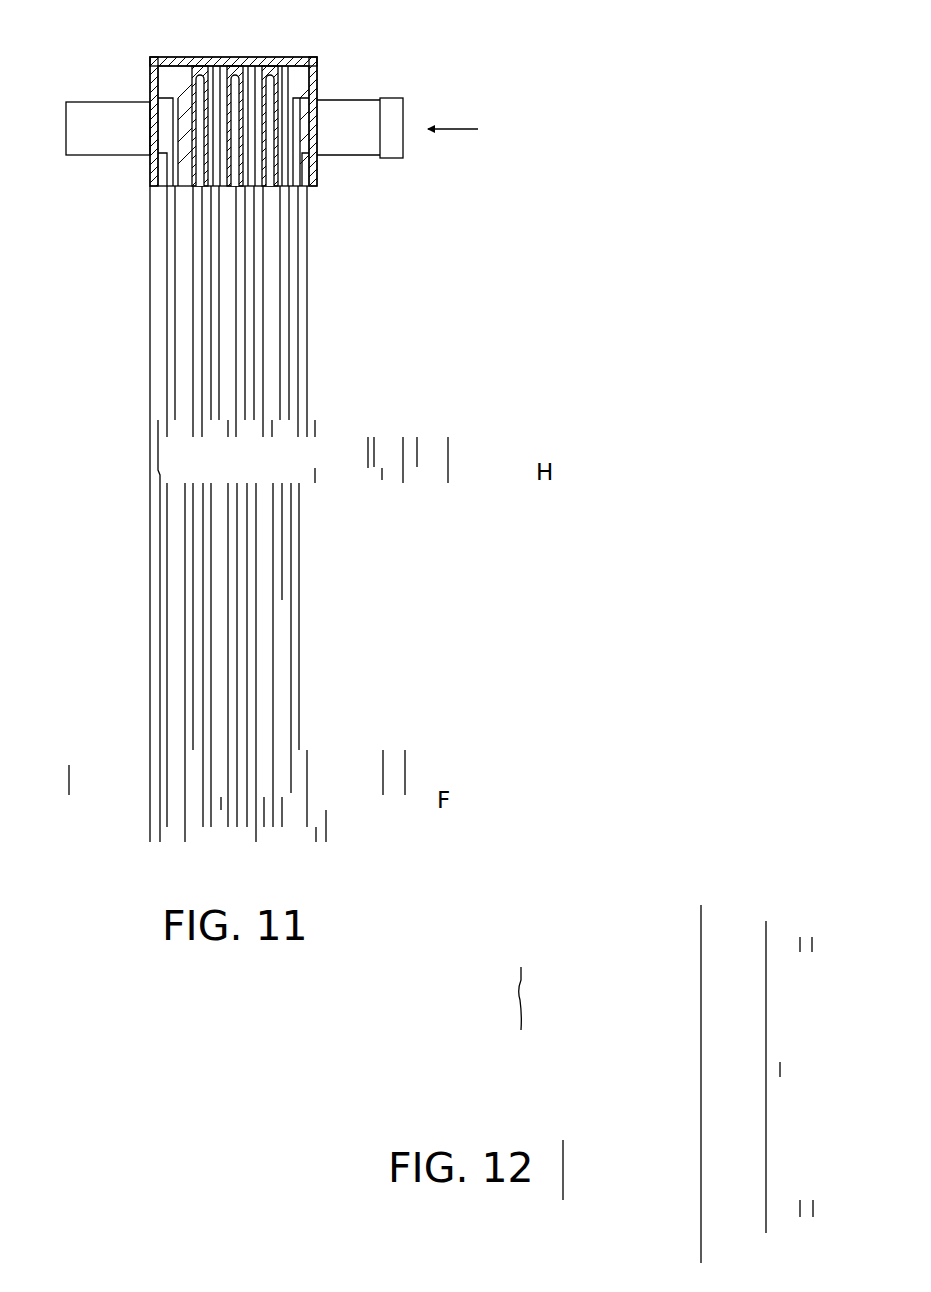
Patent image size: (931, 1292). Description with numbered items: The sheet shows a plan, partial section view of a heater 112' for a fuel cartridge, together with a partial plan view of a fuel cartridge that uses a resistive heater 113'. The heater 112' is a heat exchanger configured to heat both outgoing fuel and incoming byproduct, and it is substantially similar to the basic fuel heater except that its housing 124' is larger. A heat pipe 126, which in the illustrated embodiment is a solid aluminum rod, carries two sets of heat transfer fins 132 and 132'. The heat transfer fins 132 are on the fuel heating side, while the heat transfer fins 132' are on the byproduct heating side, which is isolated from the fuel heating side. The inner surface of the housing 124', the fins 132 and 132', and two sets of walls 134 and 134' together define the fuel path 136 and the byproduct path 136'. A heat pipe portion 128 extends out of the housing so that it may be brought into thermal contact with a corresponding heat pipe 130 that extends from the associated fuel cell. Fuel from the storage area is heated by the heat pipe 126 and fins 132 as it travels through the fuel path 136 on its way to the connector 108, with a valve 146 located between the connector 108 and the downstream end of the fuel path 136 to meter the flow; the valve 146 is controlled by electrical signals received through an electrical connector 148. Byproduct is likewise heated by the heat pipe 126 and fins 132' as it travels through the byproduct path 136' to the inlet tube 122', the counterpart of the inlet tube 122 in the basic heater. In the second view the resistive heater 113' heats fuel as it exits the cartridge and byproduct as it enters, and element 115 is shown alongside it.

In FIG. 11, the byproduct path 136' is at (233, 102).
In FIG. 11, the inlet tube 122' is at (87, 107).
In FIG. 11, the heater 112' is at (507, 114).
In FIG. 11, the housing 124' is at (131, 514).
In FIG. 11, the heat transfer fins 132' is at (142, 311).
In FIG. 11, the walls 134' is at (314, 311).
In FIG. 11, the heat pipe 126 is at (116, 631).
In FIG. 11, the heat transfer fins 132 is at (142, 662).
In FIG. 11, the heat pipe portion 128 is at (398, 482).
In FIG. 11, the heat pipe 130 is at (476, 482).
In FIG. 11, the walls 134 is at (312, 655).
In FIG. 11, the inlet tube 122 is at (55, 753).
In FIG. 11, the valve 146 is at (389, 747).
In FIG. 11, the connector 108 is at (391, 830).
In FIG. 12, the connector 108 is at (831, 1236).
In FIG. 11, the fuel path 136 is at (256, 842).
In FIG. 11, the electrical connector 148 is at (348, 819).
In FIG. 12, the tube 115 is at (814, 1043).
In FIG. 12, the resistive heater 113' is at (754, 1098).